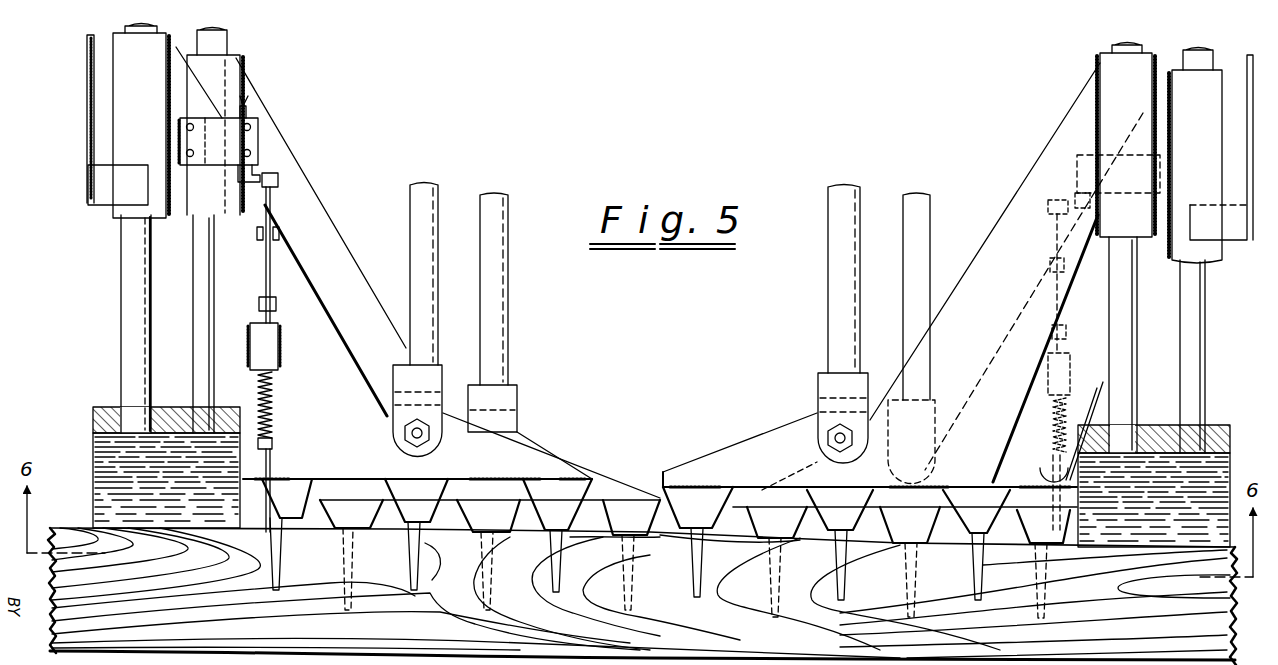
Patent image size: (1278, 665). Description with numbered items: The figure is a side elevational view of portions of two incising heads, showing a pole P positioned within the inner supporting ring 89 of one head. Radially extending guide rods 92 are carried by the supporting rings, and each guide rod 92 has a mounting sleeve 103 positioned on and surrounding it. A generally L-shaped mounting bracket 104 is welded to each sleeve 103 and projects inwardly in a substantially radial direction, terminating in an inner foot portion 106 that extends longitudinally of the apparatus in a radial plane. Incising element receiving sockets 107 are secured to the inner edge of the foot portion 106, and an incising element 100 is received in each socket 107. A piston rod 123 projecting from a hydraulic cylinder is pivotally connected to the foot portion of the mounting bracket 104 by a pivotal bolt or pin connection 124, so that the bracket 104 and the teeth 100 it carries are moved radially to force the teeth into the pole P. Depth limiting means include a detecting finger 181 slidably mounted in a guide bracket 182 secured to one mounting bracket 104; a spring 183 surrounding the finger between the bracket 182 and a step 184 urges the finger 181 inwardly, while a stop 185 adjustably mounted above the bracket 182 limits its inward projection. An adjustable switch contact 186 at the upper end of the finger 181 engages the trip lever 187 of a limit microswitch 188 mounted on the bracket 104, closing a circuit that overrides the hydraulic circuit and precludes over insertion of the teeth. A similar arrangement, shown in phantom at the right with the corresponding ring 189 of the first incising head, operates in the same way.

The wood panel workpiece P is at (1210, 626).
The inner supporting ring 89 is at (105, 406).
The guide rod 92 is at (200, 334).
The mounting sleeve 103 is at (225, 80).
The mounting bracket 104 is at (366, 303).
The inner foot portion 106 is at (606, 486).
The incising element receiving socket 107 is at (497, 520).
The incising element 100 is at (406, 567).
The piston rod 123 is at (497, 233).
The pivotal bolt or pin connection 124 is at (424, 433).
The detecting finger 181 is at (263, 533).
The guide bracket 182 is at (280, 345).
The spring 183 is at (276, 380).
The step 184 is at (273, 444).
The stop 185 is at (259, 303).
The adjustable switch contact 186 is at (279, 180).
The trip lever 187 is at (262, 172).
The limit microswitch 188 is at (258, 135).
The base block 189 is at (1214, 425).